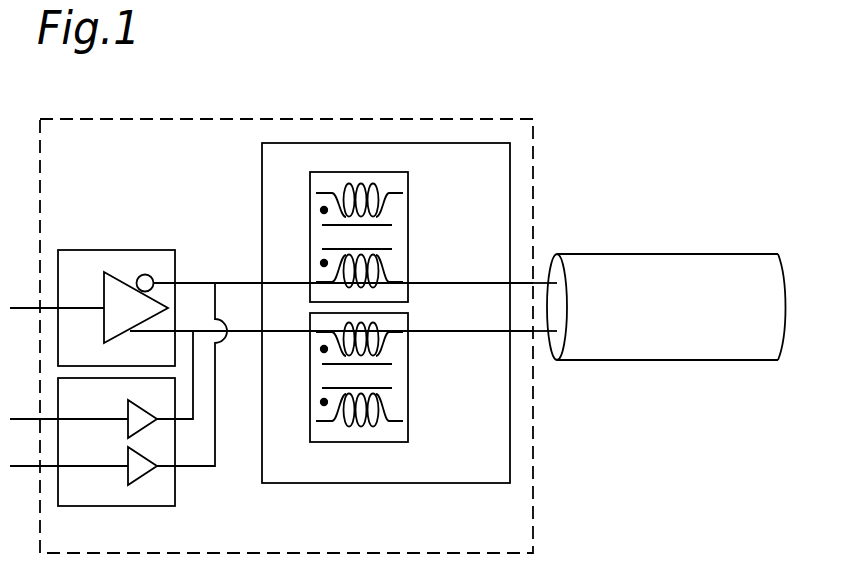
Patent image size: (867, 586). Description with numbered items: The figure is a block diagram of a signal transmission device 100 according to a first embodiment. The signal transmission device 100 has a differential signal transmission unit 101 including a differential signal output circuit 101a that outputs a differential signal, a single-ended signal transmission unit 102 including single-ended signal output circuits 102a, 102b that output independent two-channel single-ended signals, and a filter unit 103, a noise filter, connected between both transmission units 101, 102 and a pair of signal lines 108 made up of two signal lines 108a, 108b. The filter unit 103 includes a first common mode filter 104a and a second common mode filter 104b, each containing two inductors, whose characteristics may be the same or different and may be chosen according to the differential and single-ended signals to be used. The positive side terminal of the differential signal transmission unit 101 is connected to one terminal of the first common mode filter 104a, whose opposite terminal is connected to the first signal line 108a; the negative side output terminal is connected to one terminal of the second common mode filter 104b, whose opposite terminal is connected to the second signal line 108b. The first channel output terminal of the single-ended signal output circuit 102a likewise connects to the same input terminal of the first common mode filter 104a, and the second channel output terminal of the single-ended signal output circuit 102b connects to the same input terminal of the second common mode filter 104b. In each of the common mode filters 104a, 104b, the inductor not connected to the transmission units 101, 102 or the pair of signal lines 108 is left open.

The signal transmission device 100 is at (465, 114).
The differential signal transmission unit 101 is at (151, 246).
The differential signal output circuit 101a is at (116, 282).
The single-ended signal transmission unit 102 is at (180, 491).
The single-ended signal output circuit 102a is at (143, 405).
The single-ended signal output circuit 102b is at (143, 479).
The filter unit 103 is at (258, 190).
The first common mode filter 104a is at (413, 375).
The second common mode filter 104b is at (413, 237).
The pair of signal lines 108 is at (728, 353).
The first signal line 108a is at (534, 331).
The second signal line 108b is at (534, 283).